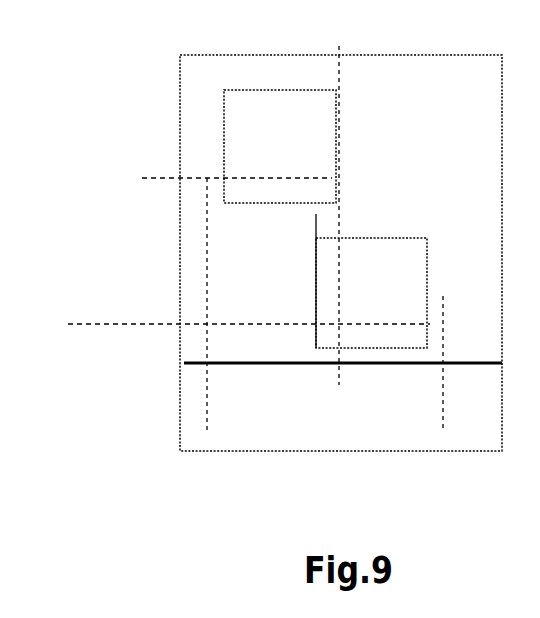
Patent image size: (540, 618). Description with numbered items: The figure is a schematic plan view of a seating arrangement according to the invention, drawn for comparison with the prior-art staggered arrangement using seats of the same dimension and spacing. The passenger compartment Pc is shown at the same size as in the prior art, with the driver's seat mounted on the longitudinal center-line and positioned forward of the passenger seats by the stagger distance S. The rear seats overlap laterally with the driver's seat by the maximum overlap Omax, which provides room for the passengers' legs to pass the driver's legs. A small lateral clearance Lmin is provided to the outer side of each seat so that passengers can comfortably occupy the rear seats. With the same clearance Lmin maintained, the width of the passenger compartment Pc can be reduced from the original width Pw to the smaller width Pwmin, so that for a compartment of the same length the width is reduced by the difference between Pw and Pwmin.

The passenger compartment Pc is at (178, 98).
The stagger distance S is at (142, 180).
The lateral clearance Lmin is at (190, 190).
The maximum lateral overlap Omax is at (278, 224).
The reduced passenger compartment width Pwmin is at (441, 432).
The passenger compartment width Pw is at (500, 451).